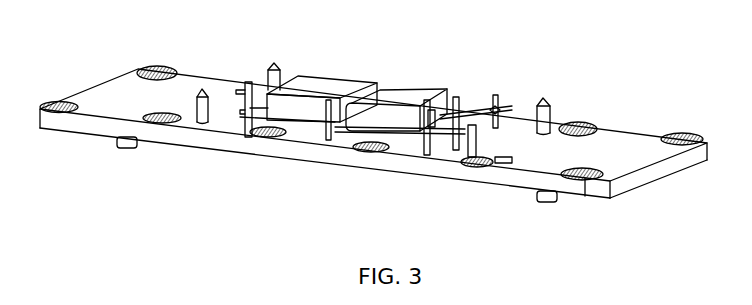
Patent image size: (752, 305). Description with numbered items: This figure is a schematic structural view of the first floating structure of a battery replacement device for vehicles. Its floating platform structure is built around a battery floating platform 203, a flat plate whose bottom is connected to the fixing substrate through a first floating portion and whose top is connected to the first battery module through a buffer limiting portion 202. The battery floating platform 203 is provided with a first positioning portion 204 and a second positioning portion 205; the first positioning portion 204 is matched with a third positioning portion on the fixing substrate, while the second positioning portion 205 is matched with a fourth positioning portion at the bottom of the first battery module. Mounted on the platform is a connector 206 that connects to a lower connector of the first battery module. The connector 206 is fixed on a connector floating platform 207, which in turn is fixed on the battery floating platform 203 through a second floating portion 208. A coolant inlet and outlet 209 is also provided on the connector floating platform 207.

The buffer limiting portion 202 is at (165, 65).
The battery floating platform 203 is at (610, 143).
The first positioning portion 204 is at (577, 122).
The second positioning portion 205 is at (545, 98).
The connector 206 is at (415, 90).
The connector floating platform 207 is at (473, 110).
The second floating portion 208 is at (498, 98).
The coolant inlet and outlet 209 is at (460, 107).